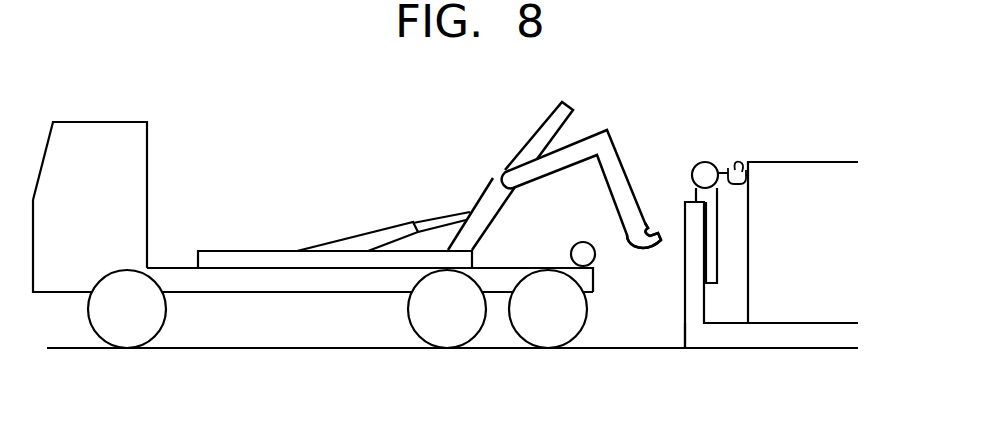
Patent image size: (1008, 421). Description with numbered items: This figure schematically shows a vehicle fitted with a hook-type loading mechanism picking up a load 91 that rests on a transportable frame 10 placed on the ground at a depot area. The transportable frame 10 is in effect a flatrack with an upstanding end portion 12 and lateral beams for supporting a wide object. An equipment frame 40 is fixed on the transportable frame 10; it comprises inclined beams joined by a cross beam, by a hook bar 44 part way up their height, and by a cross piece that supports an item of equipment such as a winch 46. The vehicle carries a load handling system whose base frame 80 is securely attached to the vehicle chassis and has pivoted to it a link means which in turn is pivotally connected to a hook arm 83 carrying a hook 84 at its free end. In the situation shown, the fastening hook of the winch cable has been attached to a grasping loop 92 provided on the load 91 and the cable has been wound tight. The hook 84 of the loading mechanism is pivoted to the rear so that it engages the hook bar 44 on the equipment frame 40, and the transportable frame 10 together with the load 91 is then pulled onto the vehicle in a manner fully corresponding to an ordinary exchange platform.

The transportable frame 10 is at (765, 347).
The upstanding end portion 12 is at (693, 315).
The equipment frame 40 is at (690, 202).
The hook bar 44 is at (710, 245).
The winch 46 is at (700, 162).
The base frame 80 is at (492, 198).
The hook arm 83 is at (617, 150).
The hook 84 is at (649, 251).
The load 91 is at (808, 180).
The grasping loop 92 is at (748, 177).